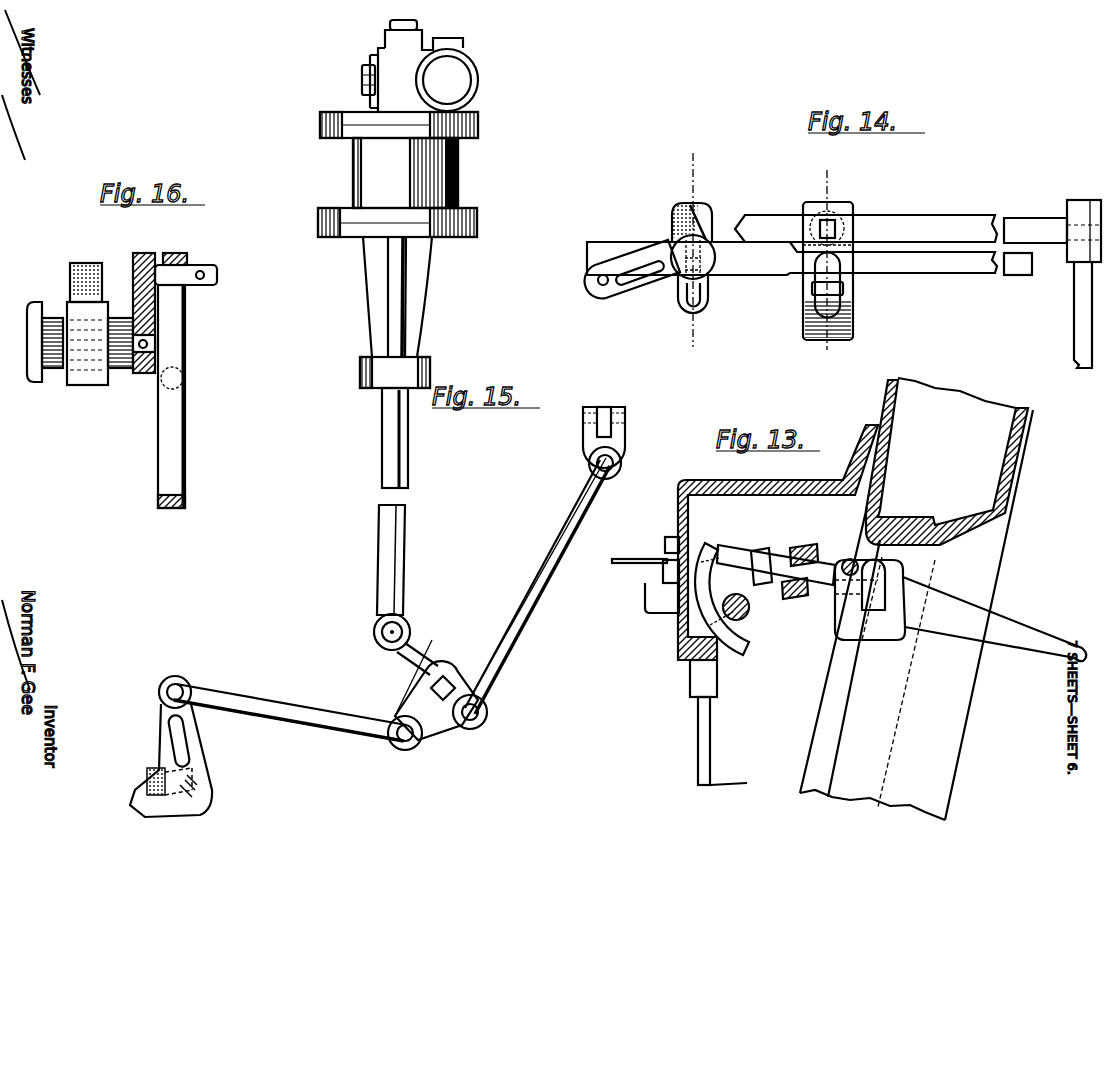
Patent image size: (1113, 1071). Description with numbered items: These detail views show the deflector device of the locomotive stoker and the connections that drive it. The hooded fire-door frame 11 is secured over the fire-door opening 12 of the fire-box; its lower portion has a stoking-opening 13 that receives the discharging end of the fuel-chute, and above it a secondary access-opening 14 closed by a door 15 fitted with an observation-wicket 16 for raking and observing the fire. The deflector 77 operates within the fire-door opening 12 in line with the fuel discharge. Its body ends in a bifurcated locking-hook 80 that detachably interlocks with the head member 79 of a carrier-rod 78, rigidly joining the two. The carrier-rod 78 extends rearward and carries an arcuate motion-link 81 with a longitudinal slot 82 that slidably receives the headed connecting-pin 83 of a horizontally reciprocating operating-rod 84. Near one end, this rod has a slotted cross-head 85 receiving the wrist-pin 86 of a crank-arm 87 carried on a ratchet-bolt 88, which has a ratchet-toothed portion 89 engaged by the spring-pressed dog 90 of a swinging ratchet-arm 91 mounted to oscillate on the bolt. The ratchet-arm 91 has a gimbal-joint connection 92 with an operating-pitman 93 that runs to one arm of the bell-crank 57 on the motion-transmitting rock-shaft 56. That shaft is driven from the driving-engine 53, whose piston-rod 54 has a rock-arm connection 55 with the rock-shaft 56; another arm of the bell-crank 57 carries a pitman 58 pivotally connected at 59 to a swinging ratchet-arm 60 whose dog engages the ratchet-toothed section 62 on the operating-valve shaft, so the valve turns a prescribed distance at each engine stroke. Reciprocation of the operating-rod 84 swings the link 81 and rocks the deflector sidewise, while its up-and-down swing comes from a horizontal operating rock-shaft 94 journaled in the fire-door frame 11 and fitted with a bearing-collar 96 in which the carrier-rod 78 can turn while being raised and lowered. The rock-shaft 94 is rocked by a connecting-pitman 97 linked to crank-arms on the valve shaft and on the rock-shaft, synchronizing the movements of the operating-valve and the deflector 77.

In FIG. 13, the fire-door frame 11 is at (812, 488).
In FIG. 13, the fire-door opening 12 is at (963, 705).
In FIG. 14, the stoking-opening 13 is at (830, 263).
In FIG. 13, the stoking-opening 13 is at (703, 703).
In FIG. 13, the secondary access-opening 14 is at (707, 482).
In FIG. 13, the door 15 is at (678, 508).
In FIG. 14, the observation-wicket 16 is at (695, 250).
In FIG. 13, the observation-wicket 16 is at (662, 572).
In FIG. 15, the driving-engine 53 is at (468, 185).
In FIG. 15, the piston-rod 54 is at (409, 487).
In FIG. 15, the rock-arm connection 55 is at (422, 655).
In FIG. 15, the motion-transmitting rock-shaft 56 is at (447, 688).
In FIG. 15, the bell-crank 57 is at (418, 688).
In FIG. 15, the pitman 58 is at (300, 714).
In FIG. 15, the pivotal connection 59 is at (182, 680).
In FIG. 15, the swinging ratchet-arm 60 is at (196, 735).
In FIG. 15, the ratchet-toothed section 62 is at (206, 796).
In FIG. 13, the deflector 77 is at (1020, 628).
In FIG. 14, the carrier-rod 78 is at (827, 220).
In FIG. 13, the carrier-rod 78 is at (825, 582).
In FIG. 13, the head member 79 is at (880, 550).
In FIG. 13, the bifurcated locking-hook 80 is at (883, 628).
In FIG. 14, the arcuate motion-link 81 is at (852, 272).
In FIG. 13, the arcuate motion-link 81 is at (750, 660).
In FIG. 14, the longitudinal slot 82 is at (822, 318).
In FIG. 14, the headed connecting-pin 83 is at (812, 290).
In FIG. 16, the reciprocating operating-rod 84 is at (187, 373).
In FIG. 14, the reciprocating operating-rod 84 is at (972, 268).
In FIG. 13, the reciprocating operating-rod 84 is at (749, 610).
In FIG. 16, the slotted cross-head 85 is at (183, 447).
In FIG. 14, the slotted cross-head 85 is at (690, 300).
In FIG. 16, the wrist-pin 86 is at (215, 275).
In FIG. 14, the wrist-pin 86 is at (706, 195).
In FIG. 16, the crank-arm 87 is at (152, 257).
In FIG. 16, the ratchet-bolt 88 is at (125, 360).
In FIG. 14, the ratchet-bolt 88 is at (680, 250).
In FIG. 16, the ratchet-toothed portion 89 is at (60, 373).
In FIG. 16, the spring-pressed dog 90 is at (73, 286).
In FIG. 14, the spring-pressed dog 90 is at (674, 215).
In FIG. 16, the swinging ratchet-arm 91 is at (88, 383).
In FIG. 14, the swinging ratchet-arm 91 is at (645, 285).
In FIG. 15, the gimbal-joint connection 92 is at (620, 433).
In FIG. 14, the gimbal-joint connection 92 is at (598, 296).
In FIG. 15, the operating-pitman 93 is at (571, 522).
In FIG. 14, the horizontal operating rock-shaft 94 is at (955, 216).
In FIG. 13, the horizontal operating rock-shaft 94 is at (783, 550).
In FIG. 14, the bearing-collar 96 is at (806, 210).
In FIG. 13, the bearing-collar 96 is at (806, 545).
In FIG. 14, the connecting-pitman 97 is at (1078, 318).